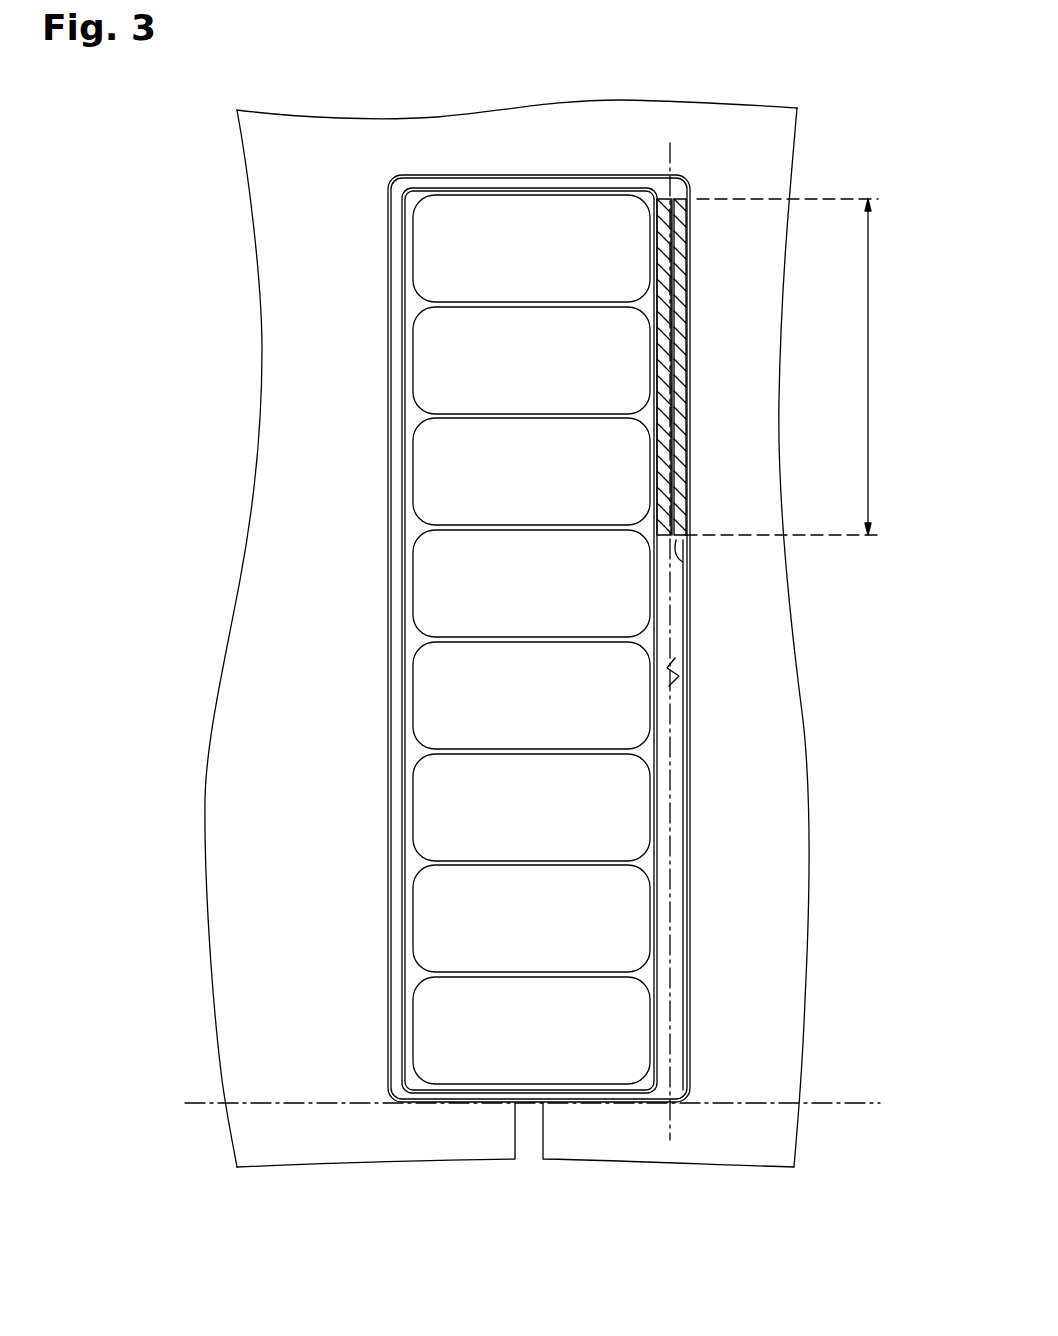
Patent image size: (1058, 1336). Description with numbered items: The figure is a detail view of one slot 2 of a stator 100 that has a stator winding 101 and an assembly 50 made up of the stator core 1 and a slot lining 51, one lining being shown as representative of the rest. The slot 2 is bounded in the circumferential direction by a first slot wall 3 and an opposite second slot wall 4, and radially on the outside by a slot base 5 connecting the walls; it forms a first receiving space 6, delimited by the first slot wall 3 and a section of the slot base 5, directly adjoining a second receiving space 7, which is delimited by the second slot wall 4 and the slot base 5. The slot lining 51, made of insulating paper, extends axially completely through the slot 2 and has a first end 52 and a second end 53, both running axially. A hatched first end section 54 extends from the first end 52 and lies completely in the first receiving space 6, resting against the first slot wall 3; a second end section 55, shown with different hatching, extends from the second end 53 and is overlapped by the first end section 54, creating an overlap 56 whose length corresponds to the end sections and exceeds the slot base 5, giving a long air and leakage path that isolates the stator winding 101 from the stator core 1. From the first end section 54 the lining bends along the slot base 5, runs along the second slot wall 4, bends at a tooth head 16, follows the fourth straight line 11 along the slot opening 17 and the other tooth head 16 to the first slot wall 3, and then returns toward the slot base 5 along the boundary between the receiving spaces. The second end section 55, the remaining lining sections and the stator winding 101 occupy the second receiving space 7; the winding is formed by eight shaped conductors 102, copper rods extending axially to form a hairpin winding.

The stator 100 is at (772, 64).
The assembly 50 is at (288, 86).
The stator core 1 is at (495, 137).
The slot 2 is at (382, 175).
The first slot wall 3 is at (675, 658).
The second slot wall 4 is at (405, 533).
The slot base 5 is at (572, 198).
The first receiving space 6 is at (692, 600).
The second receiving space 7 is at (406, 758).
The fourth straight line 11 is at (193, 1100).
The tooth head 16 is at (468, 1142).
The slot opening 17 is at (528, 1168).
The slot lining 51 is at (438, 185).
The first end 52 is at (683, 562).
The second end 53 is at (676, 180).
The first end section 54 is at (682, 280).
The second end section 55 is at (667, 227).
The overlap 56 is at (868, 367).
The stator winding 101 is at (647, 184).
The shaped conductors 102 is at (630, 818).